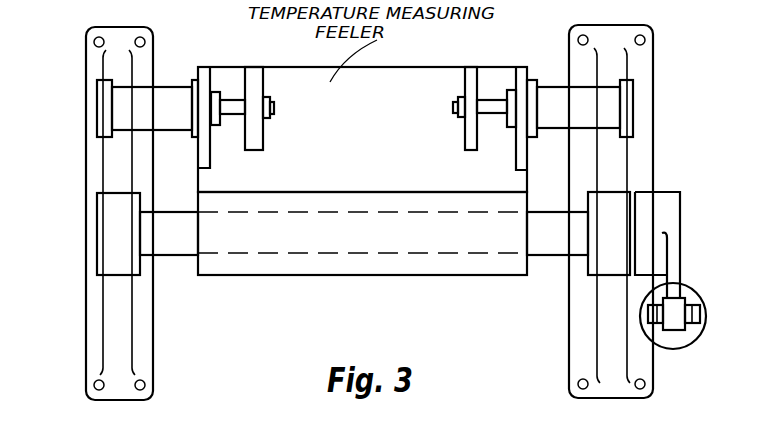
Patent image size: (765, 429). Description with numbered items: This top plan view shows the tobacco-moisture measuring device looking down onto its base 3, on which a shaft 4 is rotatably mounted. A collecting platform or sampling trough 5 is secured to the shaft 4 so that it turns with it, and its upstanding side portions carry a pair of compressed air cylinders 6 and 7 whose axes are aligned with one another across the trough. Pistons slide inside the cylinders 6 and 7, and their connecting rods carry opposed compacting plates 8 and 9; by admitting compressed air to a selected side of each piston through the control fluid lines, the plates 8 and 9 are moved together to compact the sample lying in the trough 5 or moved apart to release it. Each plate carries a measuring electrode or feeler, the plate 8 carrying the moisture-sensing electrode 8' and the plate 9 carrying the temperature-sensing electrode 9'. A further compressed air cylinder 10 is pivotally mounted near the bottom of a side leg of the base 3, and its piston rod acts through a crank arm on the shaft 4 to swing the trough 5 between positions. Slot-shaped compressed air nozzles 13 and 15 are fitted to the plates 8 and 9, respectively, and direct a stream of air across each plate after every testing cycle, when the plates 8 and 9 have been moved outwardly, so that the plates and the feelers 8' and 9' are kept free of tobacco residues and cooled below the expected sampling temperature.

The base 3 is at (123, 307).
The shaft 4 is at (555, 242).
The sampling trough 5 is at (350, 180).
The compressed air cylinder 6 is at (557, 92).
The compressed air cylinder 7 is at (162, 92).
The compacting plate 8 is at (469, 93).
The measuring electrode 8' is at (437, 96).
The compacting plate 9 is at (258, 93).
The measuring electrode 9' is at (294, 96).
The compressed air cylinder 10 is at (682, 337).
The compressed air nozzle 13 is at (455, 110).
The compressed air nozzle 15 is at (273, 112).